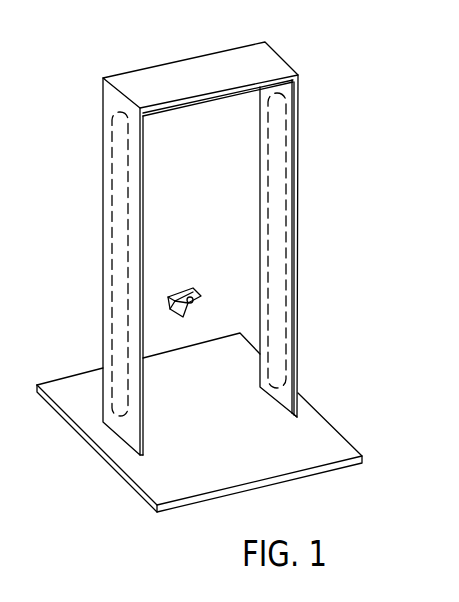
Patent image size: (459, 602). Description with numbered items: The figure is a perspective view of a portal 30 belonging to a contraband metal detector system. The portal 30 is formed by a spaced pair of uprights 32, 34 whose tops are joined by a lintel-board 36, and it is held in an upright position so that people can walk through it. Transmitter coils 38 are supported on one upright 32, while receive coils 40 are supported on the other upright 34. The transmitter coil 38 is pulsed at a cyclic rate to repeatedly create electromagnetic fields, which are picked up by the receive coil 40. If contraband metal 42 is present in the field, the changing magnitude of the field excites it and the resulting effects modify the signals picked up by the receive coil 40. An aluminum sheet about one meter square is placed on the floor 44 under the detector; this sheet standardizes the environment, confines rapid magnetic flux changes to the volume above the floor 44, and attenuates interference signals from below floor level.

The portal 30 is at (317, 206).
The upright 32 is at (143, 228).
The upright 34 is at (298, 285).
The lintel-board 36 is at (190, 56).
The transmitter coil 38 is at (143, 270).
The receive coil 40 is at (289, 238).
The contraband metal 42 is at (181, 287).
The floor 44 is at (343, 436).